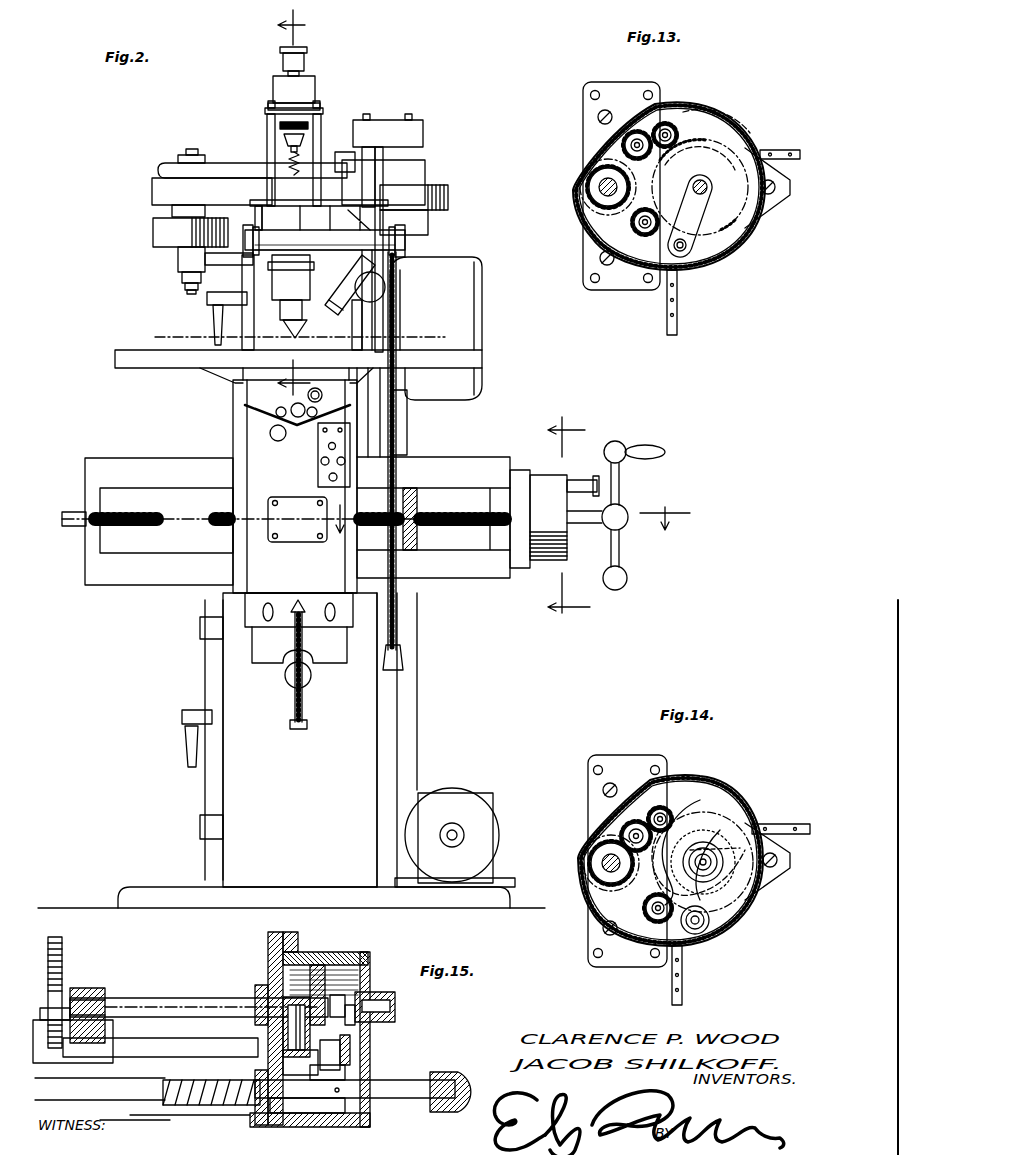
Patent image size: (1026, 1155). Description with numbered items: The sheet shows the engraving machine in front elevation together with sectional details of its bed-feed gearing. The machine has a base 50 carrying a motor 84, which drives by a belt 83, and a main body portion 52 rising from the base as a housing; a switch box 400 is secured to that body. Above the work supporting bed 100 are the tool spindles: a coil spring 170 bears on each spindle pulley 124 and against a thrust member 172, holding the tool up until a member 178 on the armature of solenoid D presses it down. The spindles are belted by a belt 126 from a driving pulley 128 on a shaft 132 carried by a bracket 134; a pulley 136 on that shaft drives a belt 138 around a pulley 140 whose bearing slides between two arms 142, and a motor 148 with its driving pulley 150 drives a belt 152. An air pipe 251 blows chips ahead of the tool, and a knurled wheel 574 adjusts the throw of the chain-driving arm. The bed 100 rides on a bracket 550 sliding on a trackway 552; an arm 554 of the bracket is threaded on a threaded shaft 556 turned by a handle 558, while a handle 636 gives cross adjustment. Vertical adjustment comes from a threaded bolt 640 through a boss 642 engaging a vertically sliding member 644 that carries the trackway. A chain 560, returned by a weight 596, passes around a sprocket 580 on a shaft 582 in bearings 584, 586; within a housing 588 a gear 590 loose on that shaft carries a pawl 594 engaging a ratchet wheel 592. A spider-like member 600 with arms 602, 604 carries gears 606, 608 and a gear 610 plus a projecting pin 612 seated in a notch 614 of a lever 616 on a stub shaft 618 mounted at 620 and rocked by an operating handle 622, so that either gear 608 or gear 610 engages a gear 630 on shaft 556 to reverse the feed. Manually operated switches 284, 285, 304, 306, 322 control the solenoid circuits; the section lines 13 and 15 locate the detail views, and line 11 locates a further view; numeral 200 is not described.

In FIG. 2, the section line 11- 11 is at (306, 202).
In FIG. 2, the solenoid D is at (322, 96).
In FIG. 2, the member 178 is at (280, 131).
In FIG. 2, the thrust member 172 is at (310, 132).
In FIG. 2, the coil spring 170 is at (284, 142).
In FIG. 2, the pulley 124 is at (300, 170).
In FIG. 2, the arms 142 is at (222, 163).
In FIG. 2, the driving pulley 128 is at (160, 175).
In FIG. 2, the belt 126 is at (178, 192).
In FIG. 2, the bracket 134 is at (245, 245).
In FIG. 2, the driving pulley 150 is at (447, 190).
In FIG. 2, the belt 152 is at (447, 200).
In FIG. 2, the belt 138 is at (153, 228).
In FIG. 2, the pulley 140 is at (160, 247).
In FIG. 2, the pulley 136 is at (183, 250).
In FIG. 2, the shaft 132 is at (190, 291).
In FIG. 2, the pipe 251 is at (262, 292).
In FIG. 2, the knurled wheel 574 is at (386, 290).
In FIG. 2, the motor 148 is at (436, 328).
In FIG. 2, the chain 560 is at (397, 320).
In FIG. 13, the chain 560 is at (784, 150).
In FIG. 14, the chain 560 is at (783, 824).
In FIG. 15, the chain 560 is at (62, 952).
In FIG. 2, the work supporting bed 100 is at (465, 353).
In FIG. 2, the bracket 550 is at (243, 430).
In FIG. 2, the handle 636 is at (292, 410).
In FIG. 2, the manually operated switch 284 is at (335, 423).
In FIG. 2, the manually operated switch 285 is at (322, 430).
In FIG. 2, the manually operated switch 304 is at (326, 446).
In FIG. 2, the manually operated switch 322 is at (320, 460).
In FIG. 2, the manually operated switch 306 is at (341, 465).
In FIG. 2, the push button 200 is at (328, 477).
In FIG. 2, the arm 554 is at (298, 522).
In FIG. 2, the section line 15- 15 is at (508, 512).
In FIG. 2, the section line 13- 13 is at (571, 517).
In FIG. 2, the switch box 400 is at (405, 425).
In FIG. 2, the trackway 552 is at (445, 465).
In FIG. 15, the trackway 552 is at (163, 1055).
In FIG. 2, the threaded shaft 556 is at (430, 527).
In FIG. 13, the threaded shaft 556 is at (600, 185).
In FIG. 14, the threaded shaft 556 is at (603, 862).
In FIG. 15, the threaded shaft 556 is at (212, 1105).
In FIG. 2, the bearing 584 is at (412, 510).
In FIG. 15, the bearing 584 is at (108, 998).
In FIG. 2, the housing 588 is at (542, 475).
In FIG. 13, the housing 588 is at (677, 104).
In FIG. 14, the housing 588 is at (685, 778).
In FIG. 15, the housing 588 is at (345, 957).
In FIG. 2, the operating handle 622 is at (590, 478).
In FIG. 15, the operating handle 622 is at (365, 1018).
In FIG. 2, the handle 558 is at (624, 553).
In FIG. 15, the handle 558 is at (462, 1072).
In FIG. 2, the main body portion 52 is at (279, 740).
In FIG. 2, the vertically sliding member 644 is at (297, 620).
In FIG. 2, the boss 642 is at (292, 678).
In FIG. 2, the threaded bolt 640 is at (306, 712).
In FIG. 2, the belt 83 is at (405, 716).
In FIG. 2, the weight 596 is at (405, 660).
In FIG. 15, the weight 596 is at (78, 1055).
In FIG. 2, the motor 84 is at (455, 837).
In FIG. 2, the base 50 is at (285, 890).
In FIG. 13, the gear 606 is at (655, 118).
In FIG. 14, the gear 606 is at (652, 805).
In FIG. 13, the pawl 594 is at (688, 118).
In FIG. 13, the ratchet wheel 592 is at (712, 157).
In FIG. 15, the ratchet wheel 592 is at (340, 980).
In FIG. 13, the gear 608 is at (622, 142).
In FIG. 14, the gear 608 is at (622, 830).
In FIG. 13, the arm 602 is at (615, 152).
In FIG. 14, the arm 602 is at (692, 808).
In FIG. 13, the gear 630 is at (605, 200).
In FIG. 14, the gear 630 is at (608, 846).
In FIG. 15, the gear 630 is at (320, 1115).
In FIG. 13, the gear 610 is at (632, 218).
In FIG. 14, the gear 610 is at (645, 905).
In FIG. 15, the gear 610 is at (345, 1070).
In FIG. 13, the lever 616 is at (690, 216).
In FIG. 15, the lever 616 is at (345, 1055).
In FIG. 13, the stub shaft 618 is at (708, 187).
In FIG. 15, the stub shaft 618 is at (392, 996).
In FIG. 13, the gear 590 is at (735, 235).
In FIG. 14, the gear 590 is at (722, 828).
In FIG. 15, the gear 590 is at (312, 957).
In FIG. 13, the notch 614 is at (686, 246).
In FIG. 13, the projecting pin 612 is at (682, 256).
In FIG. 14, the projecting pin 612 is at (688, 942).
In FIG. 15, the projecting pin 612 is at (352, 1040).
In FIG. 14, the shaft 582 is at (722, 851).
In FIG. 15, the shaft 582 is at (165, 999).
In FIG. 14, the sprocket 580 is at (738, 878).
In FIG. 15, the sprocket 580 is at (72, 990).
In FIG. 14, the arm 604 is at (712, 908).
In FIG. 15, the arm 604 is at (283, 1052).
In FIG. 15, the bearing 586 is at (268, 990).
In FIG. 15, the mounting 620 is at (347, 1000).
In FIG. 15, the spider-like member 600 is at (288, 1036).